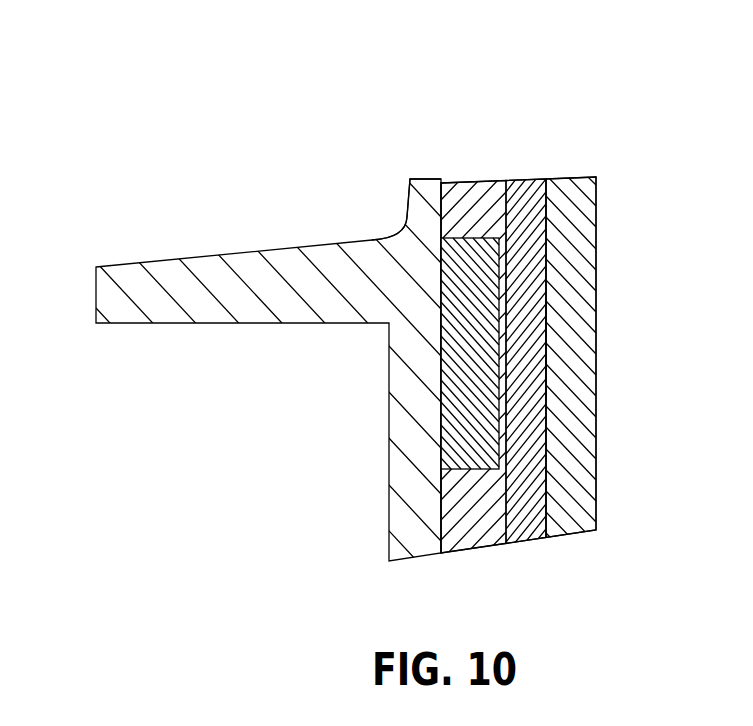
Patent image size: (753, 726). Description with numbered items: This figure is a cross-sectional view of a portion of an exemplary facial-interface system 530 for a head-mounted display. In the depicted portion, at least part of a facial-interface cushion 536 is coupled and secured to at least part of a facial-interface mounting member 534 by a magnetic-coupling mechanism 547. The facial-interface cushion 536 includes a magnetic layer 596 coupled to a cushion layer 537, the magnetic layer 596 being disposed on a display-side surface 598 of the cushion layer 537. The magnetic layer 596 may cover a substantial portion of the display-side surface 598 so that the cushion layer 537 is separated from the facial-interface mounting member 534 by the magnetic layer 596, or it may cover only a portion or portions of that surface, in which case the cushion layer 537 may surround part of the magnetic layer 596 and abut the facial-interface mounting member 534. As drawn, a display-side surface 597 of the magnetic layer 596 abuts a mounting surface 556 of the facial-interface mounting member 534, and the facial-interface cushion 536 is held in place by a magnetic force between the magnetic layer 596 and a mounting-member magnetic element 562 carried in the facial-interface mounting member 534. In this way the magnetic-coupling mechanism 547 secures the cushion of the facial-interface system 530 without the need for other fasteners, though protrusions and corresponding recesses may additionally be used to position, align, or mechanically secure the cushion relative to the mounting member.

The facial-interface system 530 is at (281, 153).
The facial-interface mounting member 534 is at (413, 212).
The facial-interface cushion 536 is at (551, 185).
The cushion layer 537 is at (585, 207).
The magnetic-coupling mechanism 547 is at (637, 536).
The mounting surface 556 is at (510, 520).
The mounting-member magnetic element 562 is at (458, 421).
The magnetic layer 596 is at (547, 349).
The display-side surface of magnetic layer 597 is at (498, 498).
The display-side surface of cushion layer 598 is at (542, 205).